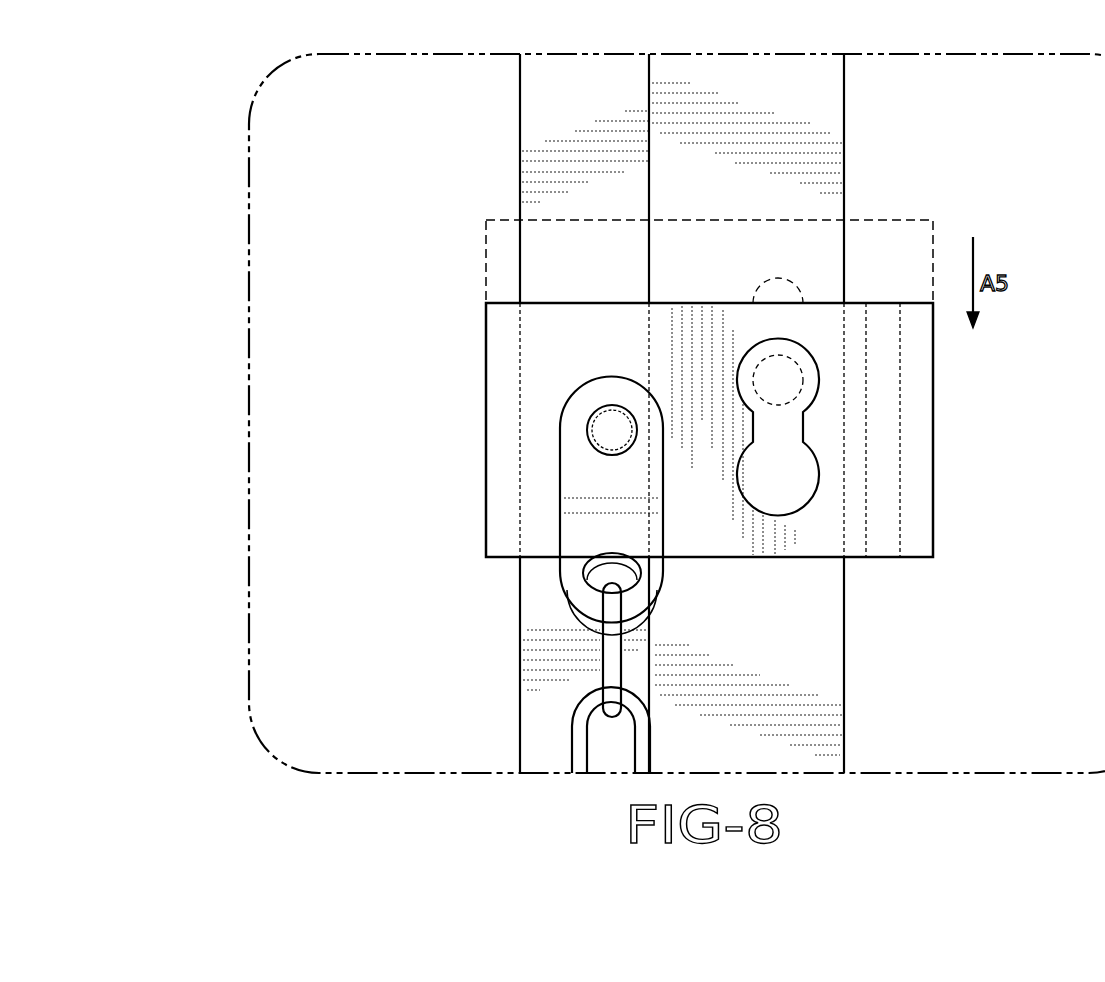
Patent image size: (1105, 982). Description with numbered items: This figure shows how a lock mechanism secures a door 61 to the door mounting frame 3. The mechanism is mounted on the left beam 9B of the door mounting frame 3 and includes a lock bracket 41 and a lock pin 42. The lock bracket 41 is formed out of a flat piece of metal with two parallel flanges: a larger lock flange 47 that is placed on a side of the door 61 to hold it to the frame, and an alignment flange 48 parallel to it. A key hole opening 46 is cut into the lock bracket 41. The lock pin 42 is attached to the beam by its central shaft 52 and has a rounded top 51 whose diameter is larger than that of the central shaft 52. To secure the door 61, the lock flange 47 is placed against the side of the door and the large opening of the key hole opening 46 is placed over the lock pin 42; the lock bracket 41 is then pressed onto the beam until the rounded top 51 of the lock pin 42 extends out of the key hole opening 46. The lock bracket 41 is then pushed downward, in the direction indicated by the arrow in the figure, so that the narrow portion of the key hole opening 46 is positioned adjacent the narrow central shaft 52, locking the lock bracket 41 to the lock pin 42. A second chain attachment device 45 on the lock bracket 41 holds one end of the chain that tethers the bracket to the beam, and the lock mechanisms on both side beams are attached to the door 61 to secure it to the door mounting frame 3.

The door mounting frame 3 is at (694, 413).
The left beam 9B is at (808, 622).
The door 61 is at (545, 103).
The lock bracket 41 is at (698, 388).
The lock flange 47 is at (500, 350).
The alignment flange 48 is at (888, 506).
The second chain attachment device 45 is at (577, 470).
The lock pin 42 is at (882, 427).
The rounded top 51 is at (865, 427).
The central shaft 52 is at (790, 378).
The key hole opening 46 is at (800, 285).